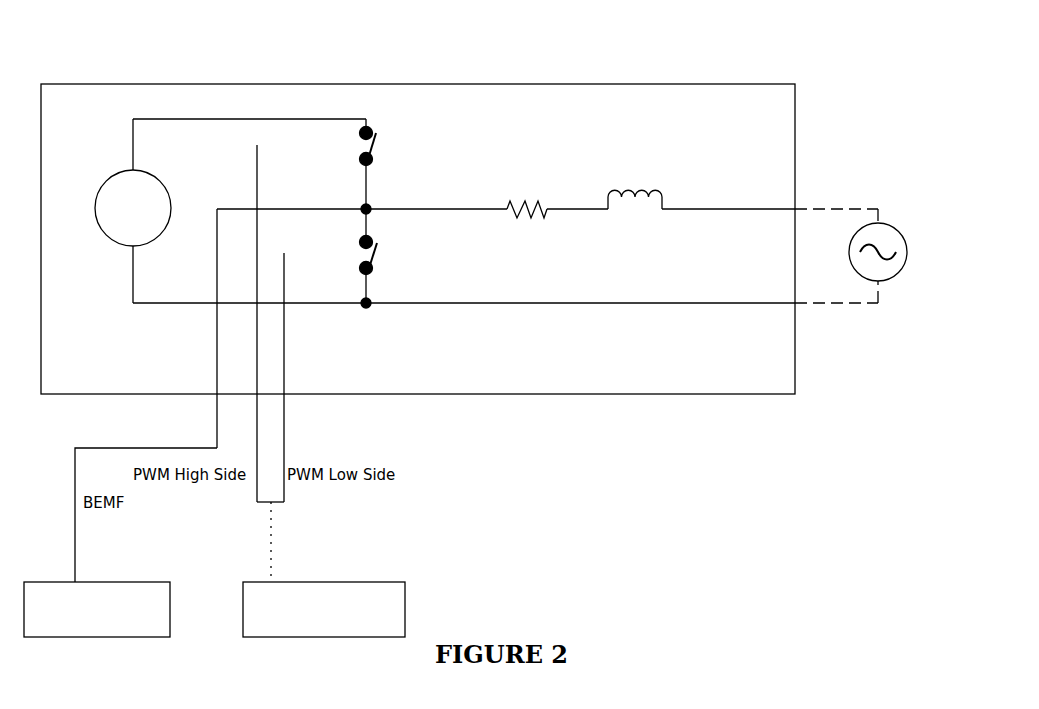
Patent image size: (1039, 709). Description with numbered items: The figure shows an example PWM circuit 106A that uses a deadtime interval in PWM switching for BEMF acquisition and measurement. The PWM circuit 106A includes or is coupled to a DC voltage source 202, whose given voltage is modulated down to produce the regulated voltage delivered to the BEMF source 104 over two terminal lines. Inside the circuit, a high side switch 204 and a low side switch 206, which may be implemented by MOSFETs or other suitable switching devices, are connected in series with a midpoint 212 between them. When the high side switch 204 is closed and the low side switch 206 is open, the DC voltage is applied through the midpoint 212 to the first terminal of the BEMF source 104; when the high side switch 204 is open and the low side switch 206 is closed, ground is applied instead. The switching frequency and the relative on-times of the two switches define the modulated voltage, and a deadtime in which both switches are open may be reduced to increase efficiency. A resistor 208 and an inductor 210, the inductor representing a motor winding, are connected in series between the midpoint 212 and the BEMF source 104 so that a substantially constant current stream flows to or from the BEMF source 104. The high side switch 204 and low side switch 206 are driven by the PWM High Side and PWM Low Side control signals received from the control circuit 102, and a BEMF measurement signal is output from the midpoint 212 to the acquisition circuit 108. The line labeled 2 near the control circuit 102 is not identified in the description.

The PWM circuit 106A is at (478, 38).
The DC voltage source 202 is at (133, 208).
The high side switch 204 is at (257, 145).
The low side switch 206 is at (284, 253).
The resistor 208 is at (527, 193).
The inductor 210 is at (635, 213).
The midpoint 212 is at (369, 205).
The BEMF source 104 is at (871, 256).
The control circuit 102 is at (324, 609).
The acquisition circuit 108 is at (97, 609).
The control bus 2 is at (263, 580).